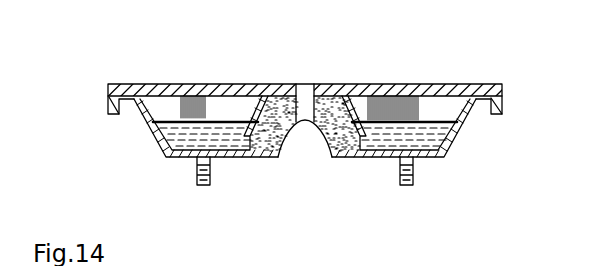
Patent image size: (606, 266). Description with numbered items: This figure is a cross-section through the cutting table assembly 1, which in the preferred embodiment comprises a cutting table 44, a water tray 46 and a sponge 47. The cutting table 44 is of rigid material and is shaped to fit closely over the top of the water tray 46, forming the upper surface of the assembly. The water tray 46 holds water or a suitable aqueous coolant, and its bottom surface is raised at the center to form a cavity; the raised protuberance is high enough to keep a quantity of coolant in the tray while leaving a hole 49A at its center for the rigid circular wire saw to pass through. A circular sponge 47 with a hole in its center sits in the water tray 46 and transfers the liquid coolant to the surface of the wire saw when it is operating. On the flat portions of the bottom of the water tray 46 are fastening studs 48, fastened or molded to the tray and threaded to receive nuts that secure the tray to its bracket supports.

The cutting table assembly 1 is at (598, 49).
The cutting table 44 is at (451, 84).
The water tray 46 is at (458, 141).
The sponge 47 is at (345, 96).
The fastening studs 48 is at (197, 172).
The hole 49A is at (293, 124).